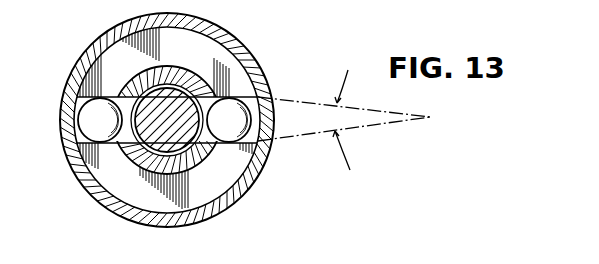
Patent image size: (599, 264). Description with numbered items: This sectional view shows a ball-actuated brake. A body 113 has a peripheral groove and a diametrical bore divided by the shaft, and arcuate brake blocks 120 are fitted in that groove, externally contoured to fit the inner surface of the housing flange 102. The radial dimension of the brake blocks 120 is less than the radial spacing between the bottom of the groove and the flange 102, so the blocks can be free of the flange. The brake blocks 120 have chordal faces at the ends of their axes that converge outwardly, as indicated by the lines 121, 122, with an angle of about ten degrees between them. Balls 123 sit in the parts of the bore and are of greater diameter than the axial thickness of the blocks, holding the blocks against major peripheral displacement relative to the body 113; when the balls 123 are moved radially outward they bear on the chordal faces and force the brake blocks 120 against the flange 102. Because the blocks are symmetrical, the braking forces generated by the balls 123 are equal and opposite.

The flange 102 is at (243, 193).
The body 113 is at (142, 162).
The brake blocks 120 is at (190, 42).
The line 121 is at (278, 142).
The line 122 is at (315, 78).
The balls 123 is at (90, 110).